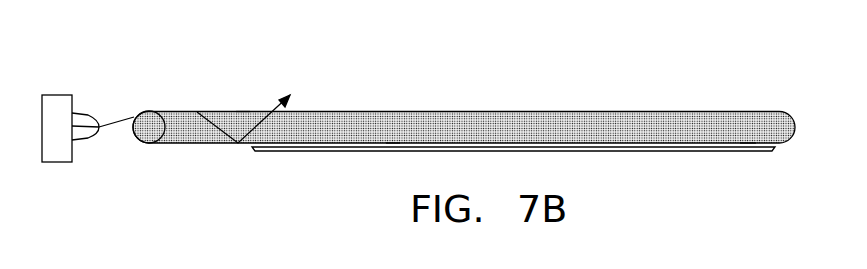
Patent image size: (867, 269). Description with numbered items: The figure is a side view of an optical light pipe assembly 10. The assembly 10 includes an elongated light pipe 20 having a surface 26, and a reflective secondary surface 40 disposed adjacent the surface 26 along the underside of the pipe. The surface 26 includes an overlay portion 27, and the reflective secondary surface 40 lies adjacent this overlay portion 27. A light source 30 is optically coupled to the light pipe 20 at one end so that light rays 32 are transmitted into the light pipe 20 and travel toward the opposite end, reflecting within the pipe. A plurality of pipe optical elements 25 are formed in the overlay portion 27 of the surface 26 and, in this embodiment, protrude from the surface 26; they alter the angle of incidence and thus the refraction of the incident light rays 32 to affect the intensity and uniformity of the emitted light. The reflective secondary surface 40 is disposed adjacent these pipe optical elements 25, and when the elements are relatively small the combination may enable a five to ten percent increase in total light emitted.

The optical light pipe assembly 10 is at (790, 100).
The light pipe 20 is at (148, 113).
The pipe optical elements 25 is at (393, 148).
The surface 26 is at (243, 112).
The overlay portion 27 is at (748, 143).
The light source 30 is at (57, 162).
The light rays 32 is at (214, 126).
The reflective secondary surface 40 is at (670, 150).